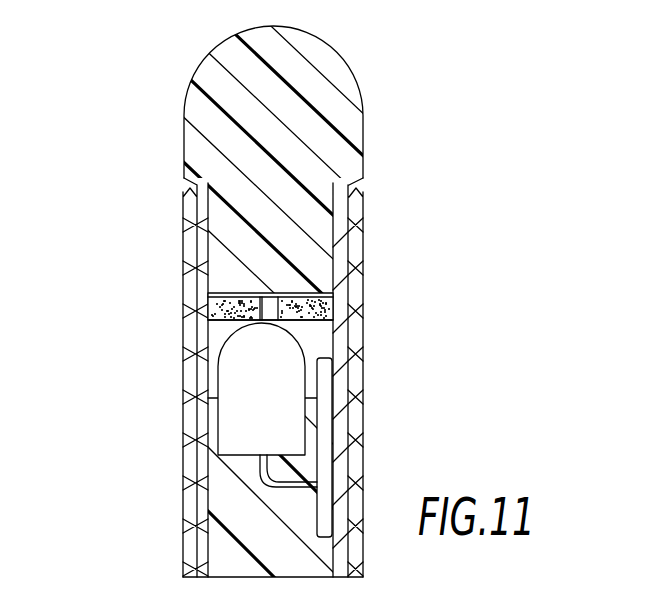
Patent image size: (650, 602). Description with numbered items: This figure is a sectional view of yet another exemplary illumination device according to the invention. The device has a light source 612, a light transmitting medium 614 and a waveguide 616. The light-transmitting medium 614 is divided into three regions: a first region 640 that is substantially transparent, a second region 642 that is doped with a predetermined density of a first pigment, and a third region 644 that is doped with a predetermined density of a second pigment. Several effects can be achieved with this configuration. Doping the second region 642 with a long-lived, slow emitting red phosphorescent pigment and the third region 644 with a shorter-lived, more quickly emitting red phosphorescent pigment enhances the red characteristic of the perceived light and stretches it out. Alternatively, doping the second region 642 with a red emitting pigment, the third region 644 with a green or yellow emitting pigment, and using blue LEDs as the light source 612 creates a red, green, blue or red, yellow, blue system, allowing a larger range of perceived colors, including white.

The waveguide 616 is at (208, 67).
The third region 644 is at (220, 290).
The first region 640 is at (270, 315).
The second region 642 is at (322, 305).
The light transmitting medium 614 is at (314, 327).
The light source 612 is at (223, 368).